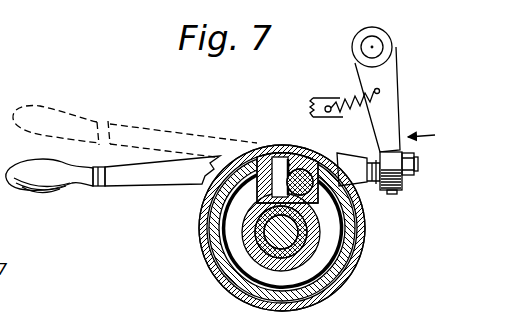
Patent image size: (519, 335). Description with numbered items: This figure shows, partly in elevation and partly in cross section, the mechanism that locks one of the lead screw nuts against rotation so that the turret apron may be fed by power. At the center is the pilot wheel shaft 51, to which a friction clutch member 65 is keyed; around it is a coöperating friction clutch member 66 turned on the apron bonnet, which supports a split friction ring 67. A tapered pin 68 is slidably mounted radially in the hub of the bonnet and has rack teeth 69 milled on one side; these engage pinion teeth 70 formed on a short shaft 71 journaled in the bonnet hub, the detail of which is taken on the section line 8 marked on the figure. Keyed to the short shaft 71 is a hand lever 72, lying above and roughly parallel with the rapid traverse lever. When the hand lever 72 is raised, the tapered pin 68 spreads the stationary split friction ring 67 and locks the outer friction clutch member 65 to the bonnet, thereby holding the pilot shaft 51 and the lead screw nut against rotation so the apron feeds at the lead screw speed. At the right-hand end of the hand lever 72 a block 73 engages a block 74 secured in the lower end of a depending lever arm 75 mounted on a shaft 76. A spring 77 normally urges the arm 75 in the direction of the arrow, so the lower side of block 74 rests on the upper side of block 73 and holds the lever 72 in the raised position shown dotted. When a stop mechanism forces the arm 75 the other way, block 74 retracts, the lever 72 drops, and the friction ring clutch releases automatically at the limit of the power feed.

The section line 8— 8 is at (300, 202).
The pilot wheel shaft 51 is at (268, 233).
The friction clutch member 65 is at (316, 293).
The coöperating friction clutch member 66 is at (330, 267).
The split friction ring 67 is at (357, 227).
The tapered pin 68 is at (258, 146).
The rack teeth 69 is at (288, 178).
The pinion teeth 70 is at (285, 158).
The short shaft 71 is at (308, 158).
The hand lever 72 is at (122, 183).
The block 73 is at (384, 190).
The block 74 is at (378, 161).
The depending lever arm 75 is at (398, 111).
The shaft 76 is at (383, 44).
The spring 77 is at (343, 98).